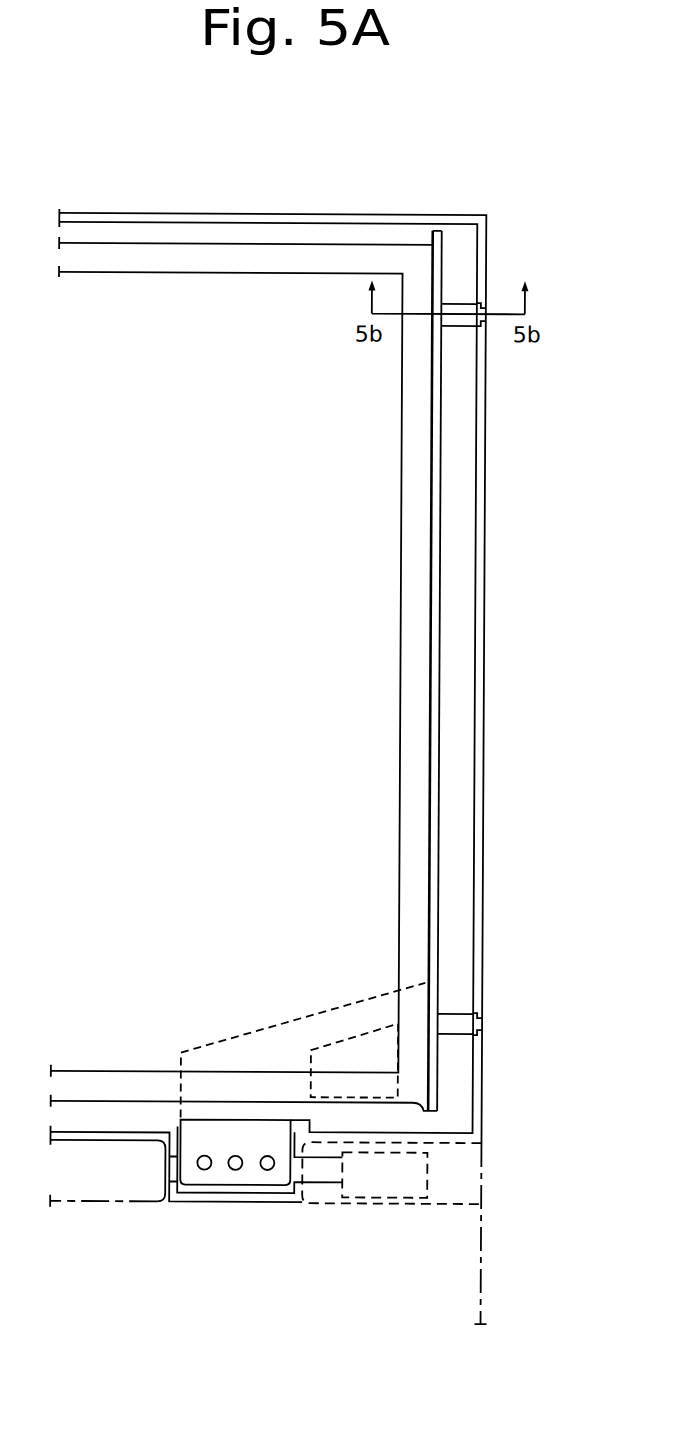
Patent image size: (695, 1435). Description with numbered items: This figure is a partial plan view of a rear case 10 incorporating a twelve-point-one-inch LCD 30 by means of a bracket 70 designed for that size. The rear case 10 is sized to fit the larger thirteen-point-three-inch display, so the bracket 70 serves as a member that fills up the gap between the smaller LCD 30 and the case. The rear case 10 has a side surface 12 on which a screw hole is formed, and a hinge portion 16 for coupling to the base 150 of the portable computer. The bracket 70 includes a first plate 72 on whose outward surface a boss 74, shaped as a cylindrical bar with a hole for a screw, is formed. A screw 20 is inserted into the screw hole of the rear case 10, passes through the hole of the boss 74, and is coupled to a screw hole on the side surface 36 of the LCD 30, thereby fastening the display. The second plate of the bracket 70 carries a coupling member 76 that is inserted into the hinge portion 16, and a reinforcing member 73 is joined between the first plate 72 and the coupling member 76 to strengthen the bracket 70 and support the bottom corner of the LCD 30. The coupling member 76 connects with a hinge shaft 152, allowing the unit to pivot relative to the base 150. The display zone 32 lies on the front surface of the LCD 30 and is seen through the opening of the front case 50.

The rear case 10 is at (490, 765).
The side surface 12 is at (475, 406).
The hinge portion 16 is at (237, 1203).
The screw 20 is at (481, 1021).
The 12.1-inch LCD 30 is at (319, 258).
The display zone 32 is at (151, 620).
The side surface of LCD 36 is at (323, 670).
The front case 50 is at (336, 636).
The bracket 70 is at (446, 681).
The first plate 72 is at (440, 542).
The reinforcing member 73 is at (292, 1020).
The boss 74 is at (458, 308).
The coupling member 76 is at (283, 1183).
The base 150 is at (452, 1275).
The hinge shaft 152 is at (410, 1177).